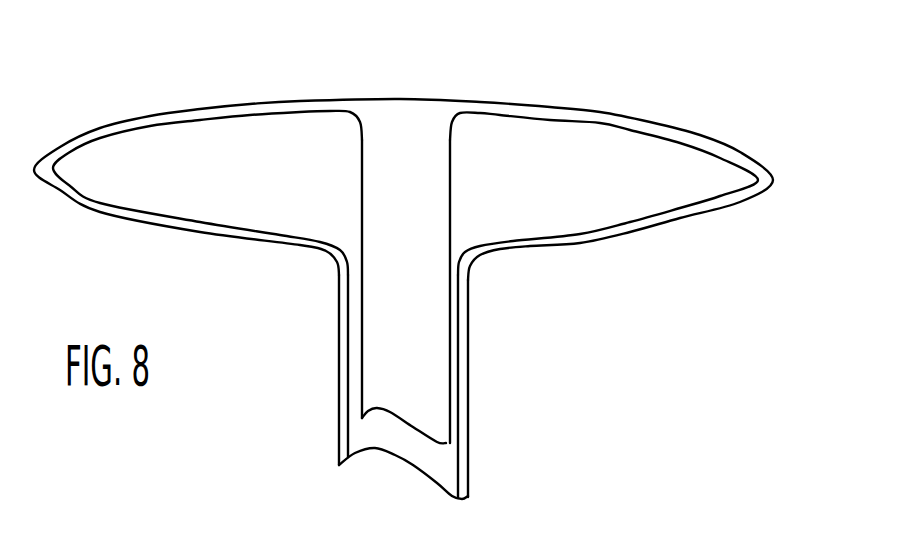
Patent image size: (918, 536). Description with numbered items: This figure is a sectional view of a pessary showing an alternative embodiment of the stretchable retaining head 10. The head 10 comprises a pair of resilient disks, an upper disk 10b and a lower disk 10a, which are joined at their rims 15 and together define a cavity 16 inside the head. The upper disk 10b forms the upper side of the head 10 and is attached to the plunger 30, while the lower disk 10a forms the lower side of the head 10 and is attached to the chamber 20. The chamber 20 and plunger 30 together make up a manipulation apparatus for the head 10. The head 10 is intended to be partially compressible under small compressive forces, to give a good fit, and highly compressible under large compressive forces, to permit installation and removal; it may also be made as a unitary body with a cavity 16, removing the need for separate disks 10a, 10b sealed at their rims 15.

The stretchable retaining head 10 is at (182, 98).
The lower disk 10a is at (470, 273).
The upper disk 10b is at (418, 123).
The rims 15 is at (766, 181).
The cavity 16 is at (622, 144).
The chamber 20 is at (466, 387).
The plunger 30 is at (397, 356).